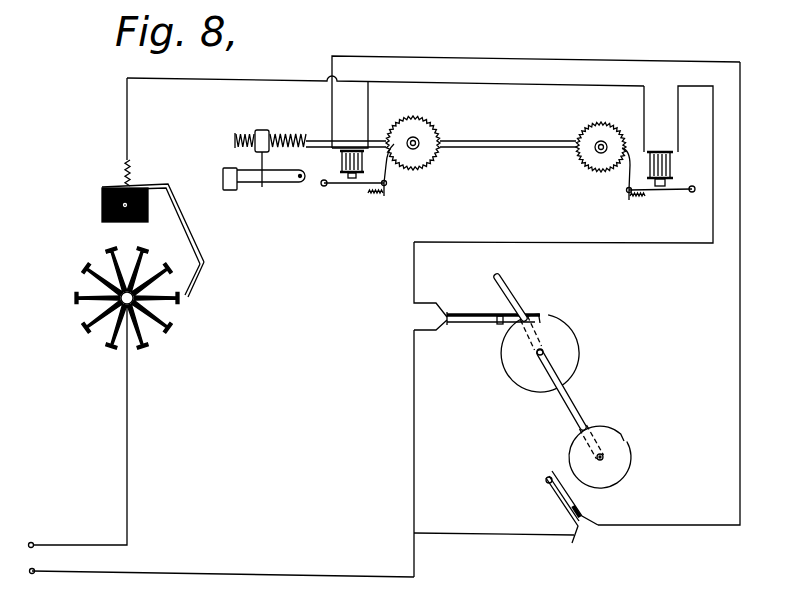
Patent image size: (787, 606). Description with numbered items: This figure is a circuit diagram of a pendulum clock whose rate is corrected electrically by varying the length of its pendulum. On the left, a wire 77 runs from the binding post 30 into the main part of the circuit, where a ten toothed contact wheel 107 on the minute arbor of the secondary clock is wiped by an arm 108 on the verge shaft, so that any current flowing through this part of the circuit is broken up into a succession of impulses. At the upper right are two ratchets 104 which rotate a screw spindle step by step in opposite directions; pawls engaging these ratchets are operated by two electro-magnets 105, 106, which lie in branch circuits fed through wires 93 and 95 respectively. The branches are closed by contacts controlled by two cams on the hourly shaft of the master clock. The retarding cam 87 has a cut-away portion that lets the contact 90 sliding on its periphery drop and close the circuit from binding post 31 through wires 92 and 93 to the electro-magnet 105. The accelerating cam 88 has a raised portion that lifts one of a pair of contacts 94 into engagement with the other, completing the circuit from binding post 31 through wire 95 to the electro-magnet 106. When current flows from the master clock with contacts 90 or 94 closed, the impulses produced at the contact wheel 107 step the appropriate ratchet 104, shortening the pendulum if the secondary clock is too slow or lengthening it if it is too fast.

The binding post 30 is at (29, 532).
The binding post 31 is at (22, 586).
The wire 77 is at (127, 423).
The retarding cam 87 is at (575, 355).
The accelerating cam 88 is at (625, 452).
The contact 90 is at (493, 306).
The wire 92 is at (303, 555).
The wire 93 is at (533, 62).
The pair of contacts 94 is at (560, 507).
The wire 95 is at (738, 335).
The ratchets 104 is at (404, 160).
The electro-magnet 105 is at (342, 162).
The electro-magnet 106 is at (670, 168).
The ten toothed contact wheel 107 is at (176, 297).
The arm 108 is at (190, 222).